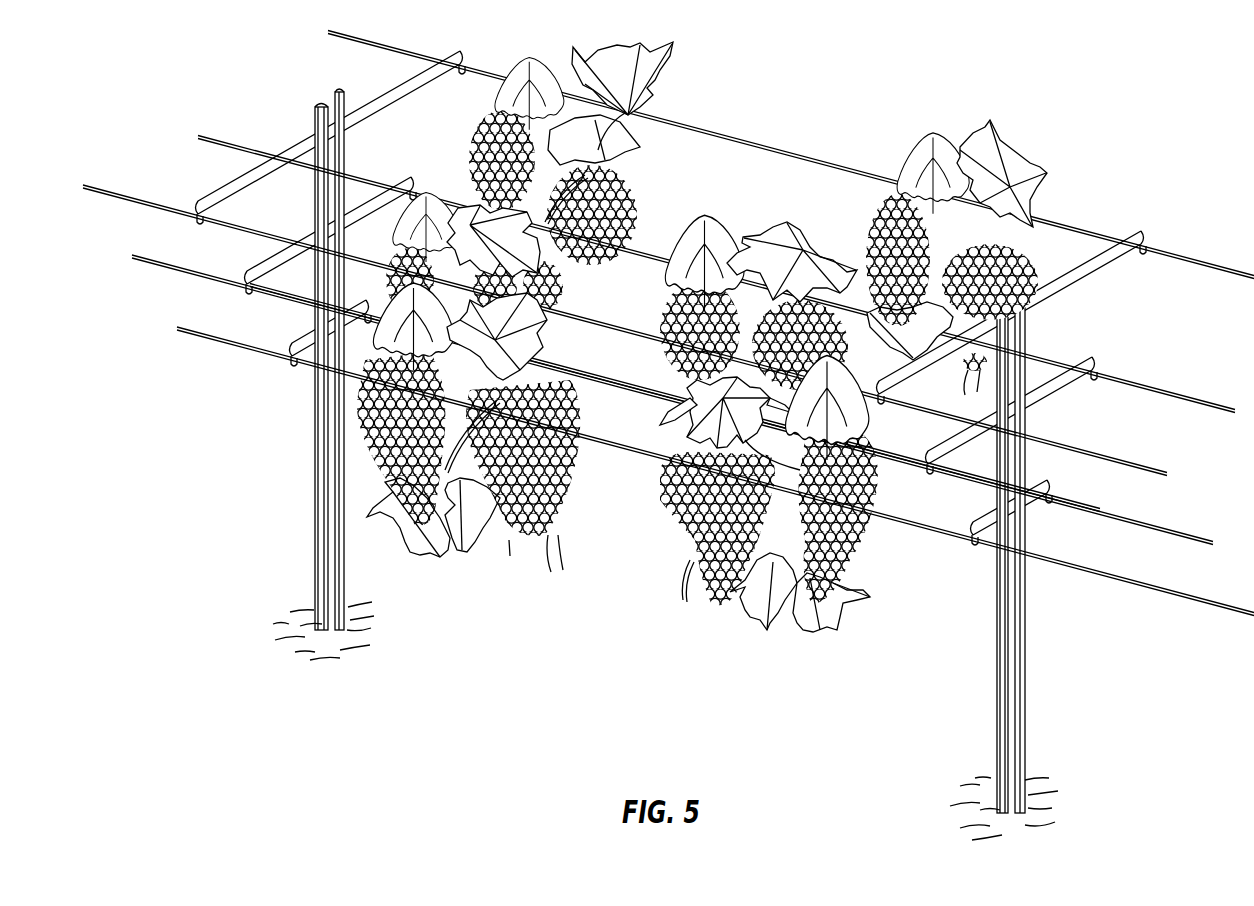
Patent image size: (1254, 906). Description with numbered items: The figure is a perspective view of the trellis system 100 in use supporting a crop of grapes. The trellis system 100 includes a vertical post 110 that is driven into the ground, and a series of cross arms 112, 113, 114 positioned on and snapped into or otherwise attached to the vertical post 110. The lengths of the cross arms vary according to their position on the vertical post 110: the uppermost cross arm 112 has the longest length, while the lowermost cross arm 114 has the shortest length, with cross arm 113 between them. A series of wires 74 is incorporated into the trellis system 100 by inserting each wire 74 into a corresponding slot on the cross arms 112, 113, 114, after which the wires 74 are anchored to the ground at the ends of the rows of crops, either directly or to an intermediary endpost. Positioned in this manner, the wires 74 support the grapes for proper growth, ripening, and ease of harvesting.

The trellis system 100 is at (668, 436).
The vertical post 110 is at (1017, 660).
The cross arm 112 is at (1112, 265).
The cross arm 113 is at (1075, 385).
The cross arm 114 is at (1043, 505).
The wire 74 is at (240, 345).